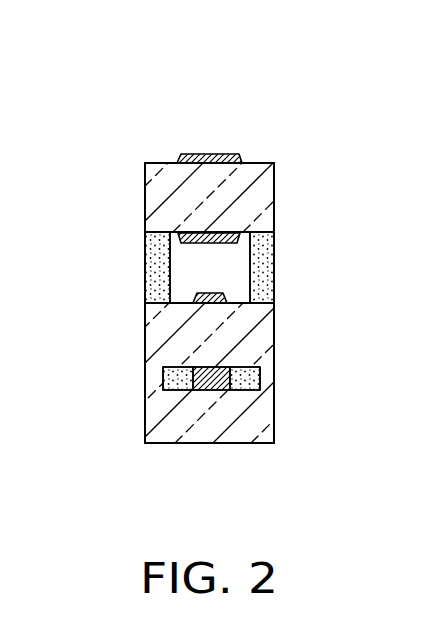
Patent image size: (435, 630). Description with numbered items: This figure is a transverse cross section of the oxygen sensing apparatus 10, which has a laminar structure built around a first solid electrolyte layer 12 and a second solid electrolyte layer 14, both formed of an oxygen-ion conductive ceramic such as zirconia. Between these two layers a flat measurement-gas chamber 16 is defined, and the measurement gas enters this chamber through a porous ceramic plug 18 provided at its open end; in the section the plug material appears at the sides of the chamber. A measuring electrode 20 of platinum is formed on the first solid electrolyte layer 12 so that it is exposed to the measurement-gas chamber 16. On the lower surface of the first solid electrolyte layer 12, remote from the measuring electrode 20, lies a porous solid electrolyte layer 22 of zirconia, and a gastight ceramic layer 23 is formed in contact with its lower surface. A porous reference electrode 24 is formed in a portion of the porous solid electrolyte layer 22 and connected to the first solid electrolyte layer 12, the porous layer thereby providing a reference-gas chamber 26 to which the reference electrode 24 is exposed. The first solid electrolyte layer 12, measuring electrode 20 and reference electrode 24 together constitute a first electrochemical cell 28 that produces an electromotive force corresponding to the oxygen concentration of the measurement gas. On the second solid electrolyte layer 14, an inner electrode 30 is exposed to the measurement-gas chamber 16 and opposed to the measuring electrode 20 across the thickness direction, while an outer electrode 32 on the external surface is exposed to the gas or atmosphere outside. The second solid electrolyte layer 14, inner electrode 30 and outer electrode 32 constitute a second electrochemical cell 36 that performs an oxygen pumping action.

The oxygen sensing apparatus 10 is at (177, 93).
The first solid electrolyte layer 12 is at (270, 333).
The second solid electrolyte layer 14 is at (275, 187).
The measurement-gas chamber 16 is at (188, 272).
The porous ceramic plug 18 is at (155, 251).
The measuring electrode 20 is at (220, 292).
The porous solid electrolyte layer 22 is at (163, 378).
The gastight ceramic layer 23 is at (220, 420).
The reference electrode 24 is at (217, 392).
The reference-gas chamber 26 is at (163, 401).
The first electrochemical cell 28 is at (363, 278).
The inner electrode 30 is at (226, 246).
The outer electrode 32 is at (238, 153).
The second electrochemical cell 36 is at (363, 100).